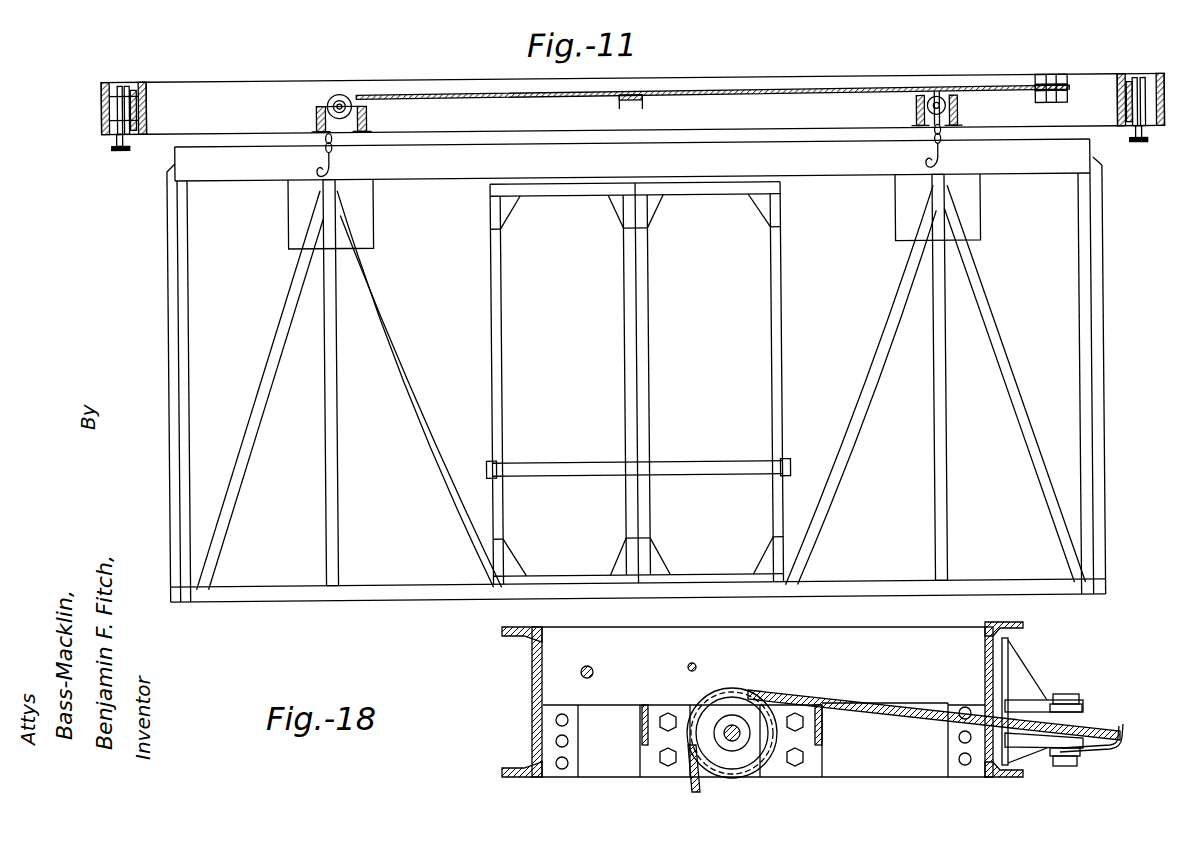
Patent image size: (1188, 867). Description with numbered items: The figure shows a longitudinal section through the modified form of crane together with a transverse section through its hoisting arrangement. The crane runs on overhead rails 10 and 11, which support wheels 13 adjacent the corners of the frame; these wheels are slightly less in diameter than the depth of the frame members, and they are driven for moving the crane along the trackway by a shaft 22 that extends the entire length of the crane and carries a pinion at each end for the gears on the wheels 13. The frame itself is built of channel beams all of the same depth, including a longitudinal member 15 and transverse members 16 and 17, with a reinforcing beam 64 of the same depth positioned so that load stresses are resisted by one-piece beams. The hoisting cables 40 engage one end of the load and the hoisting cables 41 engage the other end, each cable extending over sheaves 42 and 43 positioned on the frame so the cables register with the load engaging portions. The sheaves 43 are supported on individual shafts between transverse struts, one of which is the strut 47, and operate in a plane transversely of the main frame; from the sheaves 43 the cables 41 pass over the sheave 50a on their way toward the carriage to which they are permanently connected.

In FIG. 11, the overhead rail 10 is at (117, 148).
In FIG. 11, the overhead rail 11 is at (1140, 151).
In FIG. 11, the wheel 13 is at (124, 98).
In FIG. 18, the longitudinal member 15 is at (543, 652).
In FIG. 11, the transverse member 16 is at (150, 110).
In FIG. 18, the transverse member 16 is at (764, 627).
In FIG. 11, the transverse member 17 is at (1115, 82).
In FIG. 18, the shaft 22 is at (593, 671).
In FIG. 11, the hoisting cable 40 is at (506, 101).
In FIG. 11, the hoisting cable 41 is at (936, 141).
In FIG. 18, the hoisting cable 41 is at (900, 686).
In FIG. 11, the sheave 42 is at (328, 104).
In FIG. 18, the sheave 43 is at (768, 712).
In FIG. 11, the transverse strut 47 is at (918, 104).
In FIG. 18, the transverse strut 47 is at (658, 705).
In FIG. 18, the sheave 50a is at (1103, 720).
In FIG. 11, the reinforcing beam 64 is at (784, 82).
In FIG. 18, the reinforcing beam 64 is at (985, 650).